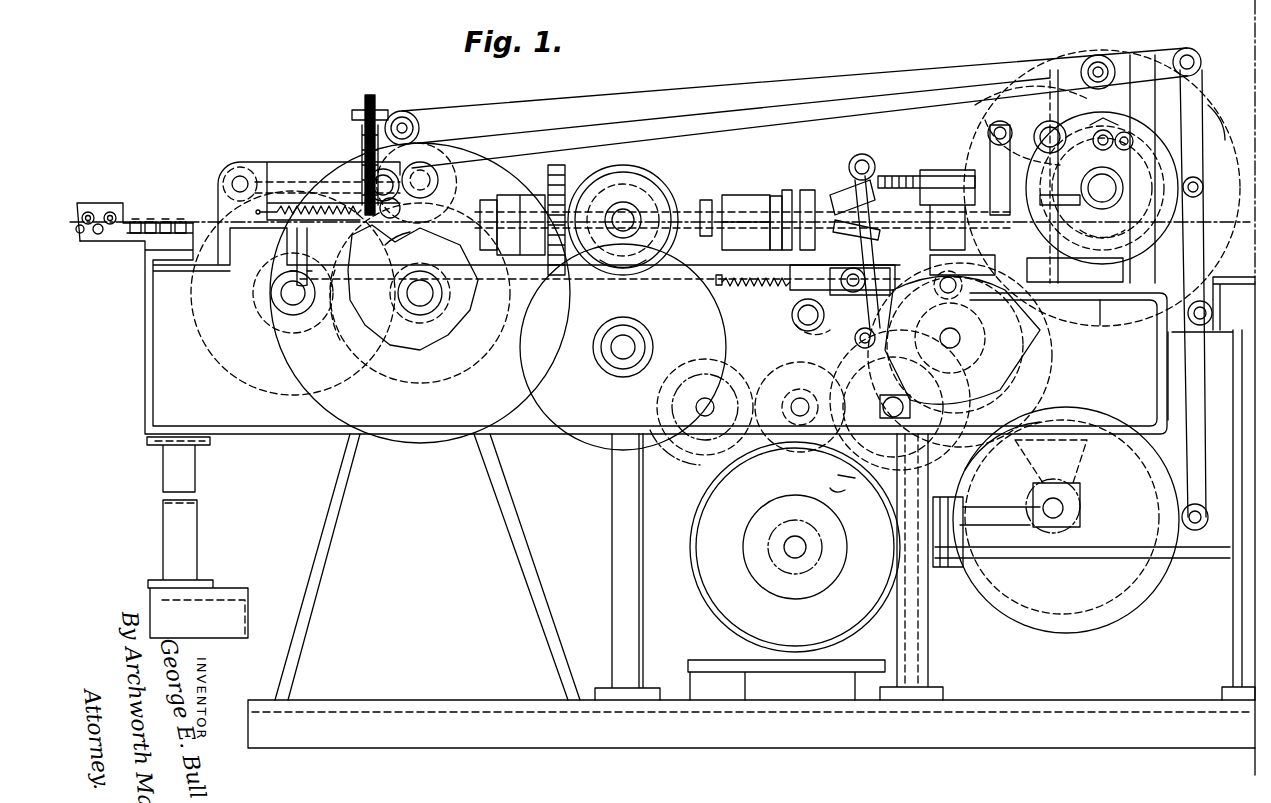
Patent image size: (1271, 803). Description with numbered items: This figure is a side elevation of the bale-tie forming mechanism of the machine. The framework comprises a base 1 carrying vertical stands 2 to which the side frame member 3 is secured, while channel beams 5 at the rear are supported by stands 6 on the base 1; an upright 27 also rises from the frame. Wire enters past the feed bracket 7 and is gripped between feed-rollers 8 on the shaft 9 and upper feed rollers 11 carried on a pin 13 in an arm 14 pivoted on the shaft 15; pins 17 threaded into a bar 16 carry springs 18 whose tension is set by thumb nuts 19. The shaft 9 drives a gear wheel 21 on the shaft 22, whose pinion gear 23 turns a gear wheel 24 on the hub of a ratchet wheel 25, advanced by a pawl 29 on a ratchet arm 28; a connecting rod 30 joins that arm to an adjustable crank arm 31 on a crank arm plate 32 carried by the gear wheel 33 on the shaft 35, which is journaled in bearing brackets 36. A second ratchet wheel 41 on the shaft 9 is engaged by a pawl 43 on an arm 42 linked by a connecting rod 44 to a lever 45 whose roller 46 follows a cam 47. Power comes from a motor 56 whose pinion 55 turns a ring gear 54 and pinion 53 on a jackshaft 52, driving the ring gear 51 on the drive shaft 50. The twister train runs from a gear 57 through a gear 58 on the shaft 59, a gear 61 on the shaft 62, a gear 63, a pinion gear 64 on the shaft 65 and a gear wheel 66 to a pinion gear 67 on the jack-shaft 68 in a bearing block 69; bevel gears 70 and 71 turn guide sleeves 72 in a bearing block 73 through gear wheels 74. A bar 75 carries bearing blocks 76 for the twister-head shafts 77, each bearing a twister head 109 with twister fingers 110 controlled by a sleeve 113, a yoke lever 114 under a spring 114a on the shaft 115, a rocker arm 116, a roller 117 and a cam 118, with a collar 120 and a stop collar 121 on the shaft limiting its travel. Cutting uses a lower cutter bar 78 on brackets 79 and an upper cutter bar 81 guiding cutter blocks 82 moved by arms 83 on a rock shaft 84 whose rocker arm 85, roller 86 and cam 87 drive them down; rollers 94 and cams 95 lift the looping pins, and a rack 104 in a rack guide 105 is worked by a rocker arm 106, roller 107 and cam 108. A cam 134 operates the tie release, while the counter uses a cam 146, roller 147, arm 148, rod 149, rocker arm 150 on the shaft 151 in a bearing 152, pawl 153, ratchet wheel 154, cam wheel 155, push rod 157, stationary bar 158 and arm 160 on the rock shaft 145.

The base 1 is at (1050, 702).
The vertical stands 2 is at (198, 522).
The side frame member 3 is at (268, 425).
The channel beams 5 is at (1234, 303).
The stands 6 is at (1232, 400).
The feed bracket 7 is at (128, 205).
The feed-rollers 8 is at (425, 378).
The shaft 9 is at (418, 300).
The feed roller 11 is at (445, 150).
The pin 13 is at (450, 172).
The arm 14 is at (295, 168).
The shaft 15 is at (222, 176).
The transversely-extending bar 16 is at (350, 185).
The pins 17 is at (371, 112).
The spring 18 is at (358, 145).
The thumb nut 19 is at (356, 122).
The gear wheel 21 is at (218, 370).
The shaft 22 is at (284, 300).
The pinion gear 23 is at (262, 290).
The gear wheel 24 is at (330, 262).
The ratchet wheel 25 is at (272, 345).
The upright 27 is at (337, 468).
The ratchet arm 28 is at (410, 112).
The pawl 29 is at (410, 135).
The connecting rod 30 is at (563, 96).
The adjustable crank arm 31 is at (1085, 52).
The crank arm plate 32 is at (1210, 100).
The gear wheel 33 is at (1115, 62).
The shaft 35 is at (1102, 188).
The bearing brackets 36 is at (1100, 320).
The ratchet wheel 41 is at (345, 345).
The arm 42 is at (413, 287).
The pawl 43 is at (400, 242).
The connecting rod 44 is at (582, 148).
The lever 45 is at (1202, 70).
The roller 46 is at (1202, 175).
The cam 47 is at (1106, 128).
The drive shaft 50 is at (950, 328).
The ring gear 51 is at (1058, 362).
The jackshaft 52 is at (840, 481).
The pinion 53 is at (848, 491).
The ring gear 54 is at (855, 552).
The pinion 55 is at (788, 570).
The motor 56 is at (810, 634).
The gear 57 is at (990, 323).
The gear 58 is at (975, 412).
The shaft 59 is at (893, 407).
The gear 61 is at (693, 372).
The shaft 62 is at (700, 386).
The gear 63 is at (675, 447).
The pinion gear 64 is at (645, 332).
The shaft 65 is at (620, 350).
The gear wheel 66 is at (540, 395).
The pinion gear 67 is at (640, 190).
The jack-shaft 68 is at (650, 208).
The bearing block 69 is at (647, 250).
The bevel gear 70 is at (618, 172).
The bevel gear 71 is at (592, 178).
The guide sleeve 72 is at (481, 218).
The bearing block 73 is at (520, 190).
The gear wheel 74 is at (575, 168).
The transversely-extending bar 75 is at (722, 280).
The bearing blocks 76 is at (752, 196).
The twister-head shaft 77 is at (745, 198).
The lower cutter bar 78 is at (988, 263).
The brackets 79 is at (890, 265).
The upper cutter bar 81 is at (992, 158).
The cutter blocks 82 is at (985, 128).
The arms 83 is at (1000, 110).
The rock shaft 84 is at (1008, 125).
The rocker arm 85 is at (1050, 155).
The roller 86 is at (1124, 130).
The cam 87 is at (1052, 192).
The rollers 94 is at (957, 284).
The cams 95 is at (1003, 373).
The rack 104 is at (890, 176).
The rack guide 105 is at (932, 170).
The rocker arm 106 is at (858, 168).
The roller 107 is at (885, 327).
The cam 108 is at (1020, 355).
The twister head 109 is at (873, 234).
The twister fingers 110 is at (882, 232).
The sleeve 113 is at (808, 195).
The yoke lever 114 is at (806, 262).
The spring 114a is at (756, 294).
The shaft 115 is at (792, 322).
The rocker arm 116 is at (800, 349).
The roller 117 is at (800, 380).
The cam 118 is at (950, 352).
The collar 120 is at (706, 200).
The stop collar 121 is at (786, 190).
The cam 134 is at (1075, 270).
The rock shaft 145 is at (1218, 560).
The cam 146 is at (1102, 238).
The roller 147 is at (1090, 126).
The arm 148 is at (1229, 120).
The rod 149 is at (1207, 293).
The rocker arm 150 is at (1102, 488).
The shaft 151 is at (1082, 508).
The bearing 152 is at (1002, 446).
The pawl 153 is at (1208, 520).
The ratchet wheel 154 is at (1105, 588).
The cam wheel 155 is at (1112, 616).
The push rod 157 is at (966, 505).
The stationary bar 158 is at (988, 522).
The arm 160 is at (955, 567).